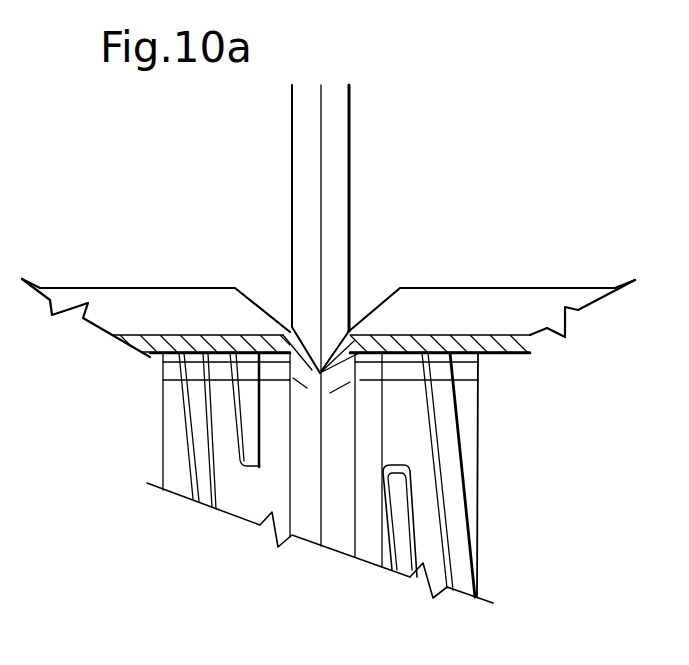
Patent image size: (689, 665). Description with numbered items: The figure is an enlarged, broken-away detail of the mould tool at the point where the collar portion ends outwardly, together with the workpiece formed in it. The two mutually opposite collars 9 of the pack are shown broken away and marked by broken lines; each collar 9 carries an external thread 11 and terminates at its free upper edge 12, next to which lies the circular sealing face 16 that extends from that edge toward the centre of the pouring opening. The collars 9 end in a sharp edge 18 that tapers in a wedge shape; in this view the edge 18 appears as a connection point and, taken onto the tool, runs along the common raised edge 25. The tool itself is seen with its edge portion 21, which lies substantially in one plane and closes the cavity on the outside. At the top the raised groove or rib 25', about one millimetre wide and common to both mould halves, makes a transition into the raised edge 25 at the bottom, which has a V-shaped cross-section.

The groove 25' is at (286, 229).
The free edge 12 is at (290, 330).
The sealing face 16 is at (348, 332).
The edge portion 21 is at (103, 300).
The collar 9 is at (490, 362).
The sharp edge 18 is at (310, 374).
The raised edge 25 is at (287, 489).
The external thread 11 is at (467, 477).